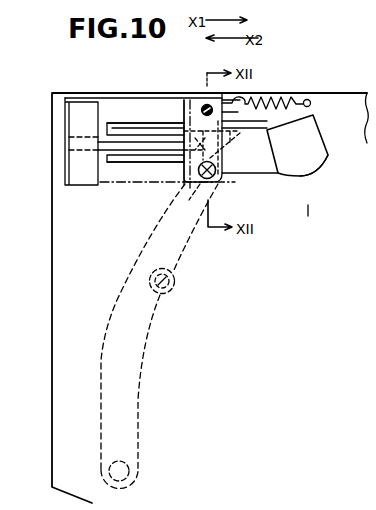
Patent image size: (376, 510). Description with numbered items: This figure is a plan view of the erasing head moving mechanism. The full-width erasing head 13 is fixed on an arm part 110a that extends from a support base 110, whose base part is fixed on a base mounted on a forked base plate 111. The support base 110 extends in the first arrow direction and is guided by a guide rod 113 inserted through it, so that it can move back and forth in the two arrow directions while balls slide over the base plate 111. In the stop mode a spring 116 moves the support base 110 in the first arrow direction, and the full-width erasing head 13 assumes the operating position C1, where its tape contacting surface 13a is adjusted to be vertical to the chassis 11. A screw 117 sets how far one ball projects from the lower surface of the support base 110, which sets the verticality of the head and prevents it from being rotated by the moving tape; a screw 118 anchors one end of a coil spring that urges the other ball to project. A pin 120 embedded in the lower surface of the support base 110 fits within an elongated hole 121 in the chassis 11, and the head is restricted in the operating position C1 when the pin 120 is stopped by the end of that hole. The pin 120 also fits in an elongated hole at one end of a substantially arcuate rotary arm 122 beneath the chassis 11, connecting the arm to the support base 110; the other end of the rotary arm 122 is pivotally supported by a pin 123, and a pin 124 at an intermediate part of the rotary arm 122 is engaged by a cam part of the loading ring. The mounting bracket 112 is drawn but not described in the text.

The chassis 11 is at (52, 238).
The full-width erasing head 13 is at (314, 132).
The tape contacting surface 13a is at (312, 172).
The support base 110 is at (188, 97).
The arm part 110a is at (248, 172).
The forked base plate 111 is at (119, 104).
The bracket 112 is at (78, 108).
The guide rod 113 is at (128, 148).
The spring 116 is at (275, 98).
The screw 117 is at (231, 117).
The screw 118 is at (177, 198).
The pin 120 is at (183, 113).
The elongated hole 121 is at (156, 148).
The rotary arm 122 is at (100, 346).
The pin 123 is at (109, 477).
The pin 124 is at (180, 283).
The operating position C1 is at (309, 224).